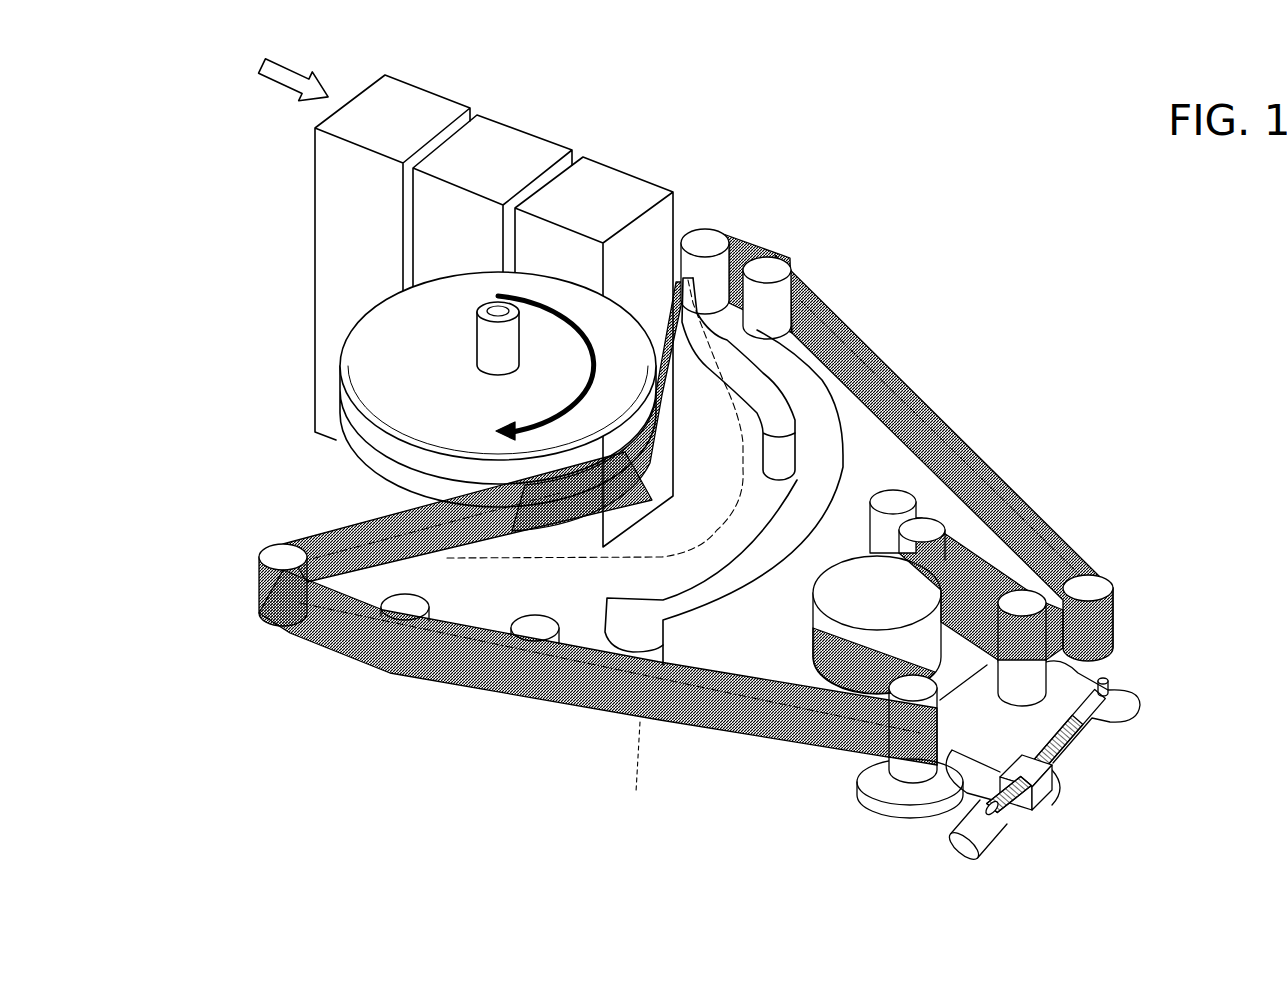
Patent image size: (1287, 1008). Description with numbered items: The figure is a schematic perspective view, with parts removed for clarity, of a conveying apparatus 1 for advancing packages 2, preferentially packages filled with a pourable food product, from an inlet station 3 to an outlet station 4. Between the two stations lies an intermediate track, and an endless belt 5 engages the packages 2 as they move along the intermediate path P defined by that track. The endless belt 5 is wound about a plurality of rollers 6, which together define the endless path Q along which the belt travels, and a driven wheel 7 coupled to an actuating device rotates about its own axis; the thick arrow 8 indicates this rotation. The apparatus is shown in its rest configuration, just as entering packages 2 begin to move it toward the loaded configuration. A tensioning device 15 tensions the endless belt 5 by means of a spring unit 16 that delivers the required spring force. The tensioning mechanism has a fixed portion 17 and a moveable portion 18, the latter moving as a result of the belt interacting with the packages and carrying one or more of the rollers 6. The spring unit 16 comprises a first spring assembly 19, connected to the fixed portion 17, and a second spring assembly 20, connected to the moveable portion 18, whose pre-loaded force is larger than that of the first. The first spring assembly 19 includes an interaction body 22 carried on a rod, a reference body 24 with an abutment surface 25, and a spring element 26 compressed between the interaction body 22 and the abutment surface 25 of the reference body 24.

The conveying apparatus 1 is at (676, 464).
The packages 2 is at (635, 160).
The inlet station 3 is at (343, 90).
The outlet station 4 is at (233, 431).
The endless belt 5 is at (457, 560).
The rollers 6 is at (769, 268).
The driven wheel 7 is at (360, 360).
The rotation direction arrow 8 is at (637, 283).
The intermediate path P is at (765, 507).
The endless path Q is at (635, 793).
The tensioning device 15 is at (1137, 752).
The spring unit 16 is at (1100, 751).
The fixed portion 17 is at (973, 777).
The moveable portion 18 is at (1137, 707).
The first spring assembly 19 is at (932, 860).
The second spring assembly 20 is at (1042, 726).
The interaction body 22 is at (968, 853).
The reference body 24 is at (1070, 782).
The abutment surface 25 is at (1028, 807).
The spring element 26 is at (1015, 810).